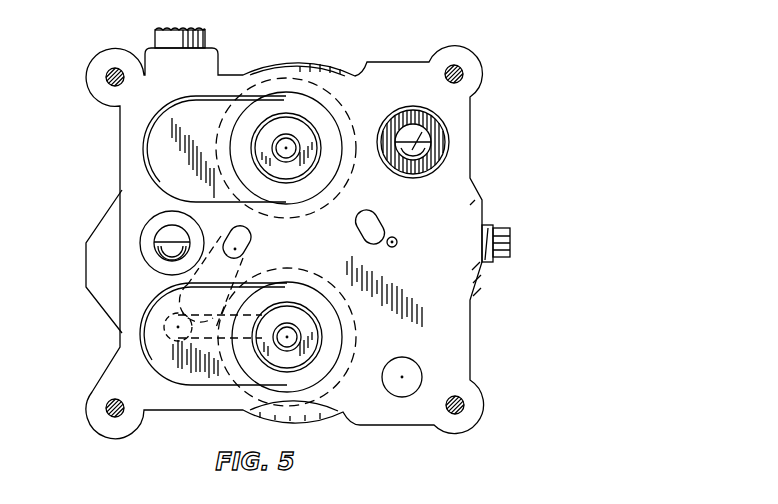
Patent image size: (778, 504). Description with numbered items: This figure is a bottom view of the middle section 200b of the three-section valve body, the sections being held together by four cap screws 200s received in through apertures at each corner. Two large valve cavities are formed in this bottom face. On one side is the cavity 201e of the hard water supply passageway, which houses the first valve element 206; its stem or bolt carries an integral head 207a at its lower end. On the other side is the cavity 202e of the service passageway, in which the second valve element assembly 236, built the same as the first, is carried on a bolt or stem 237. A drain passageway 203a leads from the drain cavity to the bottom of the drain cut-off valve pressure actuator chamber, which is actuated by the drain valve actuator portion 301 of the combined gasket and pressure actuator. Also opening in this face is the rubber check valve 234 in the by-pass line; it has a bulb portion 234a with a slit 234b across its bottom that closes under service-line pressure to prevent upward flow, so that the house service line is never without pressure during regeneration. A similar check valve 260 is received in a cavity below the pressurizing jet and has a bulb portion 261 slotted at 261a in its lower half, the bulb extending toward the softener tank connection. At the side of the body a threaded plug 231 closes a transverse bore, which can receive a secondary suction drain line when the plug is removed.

The middle section 200b is at (478, 158).
The cap screws 200s is at (464, 73).
The threaded plug 231 is at (504, 235).
The cavity 202e is at (202, 120).
The second valve element assembly 236 is at (320, 128).
The bolt or stem 237 is at (273, 150).
The check valve 234 is at (415, 113).
The bulb portion 234a is at (421, 132).
The slit 234b is at (409, 153).
The check valve 260 is at (160, 223).
The bulb portion 261 is at (179, 234).
The slot 261a is at (163, 256).
The cavity 201e is at (208, 366).
The drain passageway 203a is at (223, 321).
The drain valve actuator portion 301 is at (152, 330).
The first valve element 206 is at (312, 337).
The integral head 207a is at (280, 340).